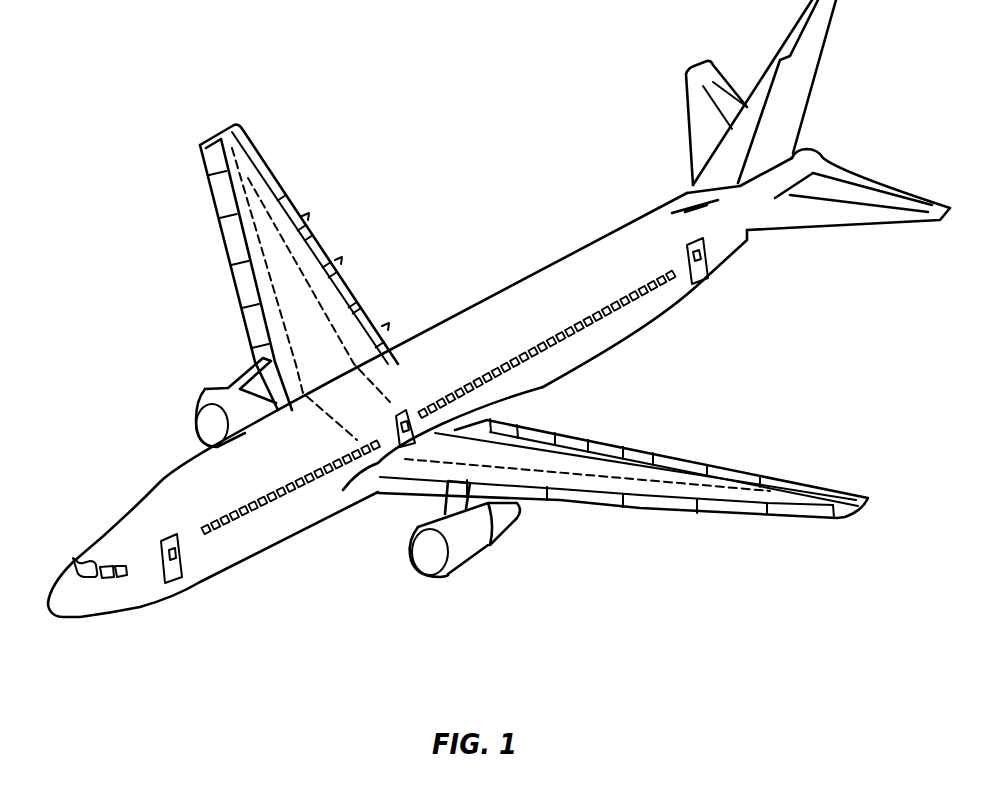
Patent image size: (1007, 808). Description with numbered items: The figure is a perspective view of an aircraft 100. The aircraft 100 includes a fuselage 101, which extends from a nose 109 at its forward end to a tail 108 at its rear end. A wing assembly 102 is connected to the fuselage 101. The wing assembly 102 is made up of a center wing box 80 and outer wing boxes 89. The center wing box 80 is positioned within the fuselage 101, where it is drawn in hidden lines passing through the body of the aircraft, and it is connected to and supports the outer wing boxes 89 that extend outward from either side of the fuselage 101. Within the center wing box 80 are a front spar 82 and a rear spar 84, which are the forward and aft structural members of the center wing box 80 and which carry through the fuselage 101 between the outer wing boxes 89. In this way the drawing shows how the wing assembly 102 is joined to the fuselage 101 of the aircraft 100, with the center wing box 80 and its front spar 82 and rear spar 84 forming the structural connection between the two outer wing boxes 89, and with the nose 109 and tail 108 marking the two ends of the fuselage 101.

The aircraft 100 is at (439, 219).
The fuselage 101 is at (575, 355).
The wing assembly 102 is at (289, 308).
The outer wing boxes 89 is at (272, 258).
The center wing box 80 is at (352, 400).
The front spar 82 is at (337, 423).
The rear spar 84 is at (387, 400).
The tail 108 is at (824, 152).
The nose 109 is at (74, 619).